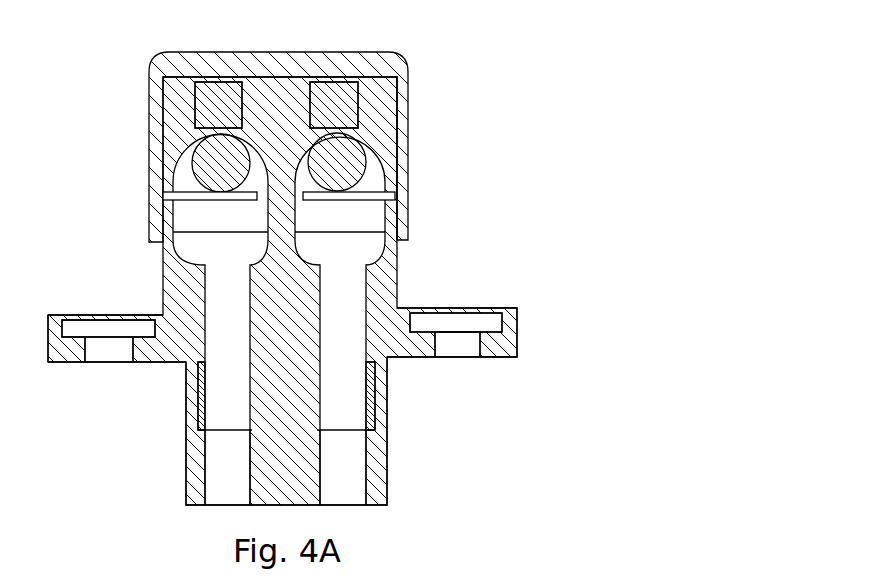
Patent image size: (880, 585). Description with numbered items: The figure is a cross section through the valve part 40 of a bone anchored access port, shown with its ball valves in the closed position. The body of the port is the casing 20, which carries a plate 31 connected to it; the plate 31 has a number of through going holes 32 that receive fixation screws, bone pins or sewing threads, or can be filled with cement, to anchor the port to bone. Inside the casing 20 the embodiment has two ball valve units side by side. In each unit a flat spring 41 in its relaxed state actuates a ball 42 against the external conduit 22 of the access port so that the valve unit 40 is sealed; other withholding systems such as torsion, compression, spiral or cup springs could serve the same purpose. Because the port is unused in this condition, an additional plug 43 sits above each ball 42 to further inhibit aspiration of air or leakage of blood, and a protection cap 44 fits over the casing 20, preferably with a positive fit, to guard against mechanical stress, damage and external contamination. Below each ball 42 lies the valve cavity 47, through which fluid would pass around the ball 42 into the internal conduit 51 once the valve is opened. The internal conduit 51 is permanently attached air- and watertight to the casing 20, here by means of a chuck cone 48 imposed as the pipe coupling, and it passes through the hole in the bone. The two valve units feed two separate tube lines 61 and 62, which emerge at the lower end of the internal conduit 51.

The casing 20 is at (399, 262).
The external conduit 22 is at (396, 113).
The plate 31 is at (518, 323).
The through going holes 32 is at (483, 319).
The valve part 40 is at (326, 303).
The flat spring 41 is at (172, 236).
The ball 42 is at (197, 140).
The plug 43 is at (195, 97).
The protection cap 44 is at (401, 58).
The valve cavity 47 is at (203, 250).
The chuck cone 48 is at (373, 387).
The internal conduit 51 is at (372, 476).
The tube line 61 is at (333, 489).
The tube line 62 is at (242, 489).